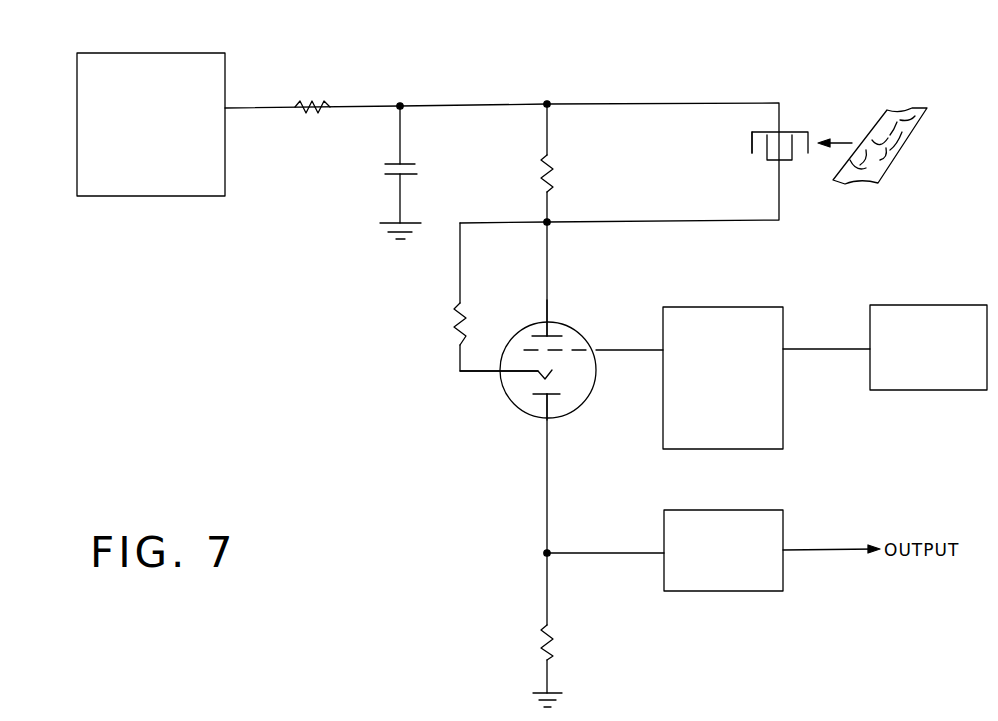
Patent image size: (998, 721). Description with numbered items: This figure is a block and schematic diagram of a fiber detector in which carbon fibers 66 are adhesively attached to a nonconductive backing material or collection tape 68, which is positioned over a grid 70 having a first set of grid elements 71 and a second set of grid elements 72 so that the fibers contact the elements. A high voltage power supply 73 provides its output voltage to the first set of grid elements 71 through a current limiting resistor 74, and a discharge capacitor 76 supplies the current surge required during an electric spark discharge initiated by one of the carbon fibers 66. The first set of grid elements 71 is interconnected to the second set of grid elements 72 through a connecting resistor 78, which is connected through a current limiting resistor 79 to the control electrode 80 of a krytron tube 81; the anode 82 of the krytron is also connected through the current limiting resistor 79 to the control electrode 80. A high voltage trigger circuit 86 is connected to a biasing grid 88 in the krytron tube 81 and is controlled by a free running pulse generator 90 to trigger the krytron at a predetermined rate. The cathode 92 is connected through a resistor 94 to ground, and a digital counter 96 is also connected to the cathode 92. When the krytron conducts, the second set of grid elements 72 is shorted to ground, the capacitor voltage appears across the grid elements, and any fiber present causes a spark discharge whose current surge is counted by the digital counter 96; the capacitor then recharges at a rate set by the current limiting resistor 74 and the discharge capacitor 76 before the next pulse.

The carbon fibers 66 is at (897, 122).
The collection tape 68 is at (928, 123).
The grid 70 is at (802, 126).
The first set of grid elements 71 is at (752, 143).
The second set of grid elements 72 is at (795, 150).
The high voltage power supply 73 is at (178, 53).
The current limiting resistor 74 is at (314, 95).
The discharge capacitor 76 is at (410, 165).
The connecting resistor 78 is at (553, 170).
The current limiting resistor 79 is at (456, 318).
The control electrode 80 is at (553, 372).
The krytron tube 81 is at (575, 320).
The anode 82 is at (537, 333).
The high voltage trigger circuit 86 is at (733, 306).
The biasing grid 88 is at (565, 350).
The pulse generator 90 is at (943, 305).
The cathode 92 is at (540, 395).
The resistor 94 is at (560, 634).
The digital counter 96 is at (745, 510).